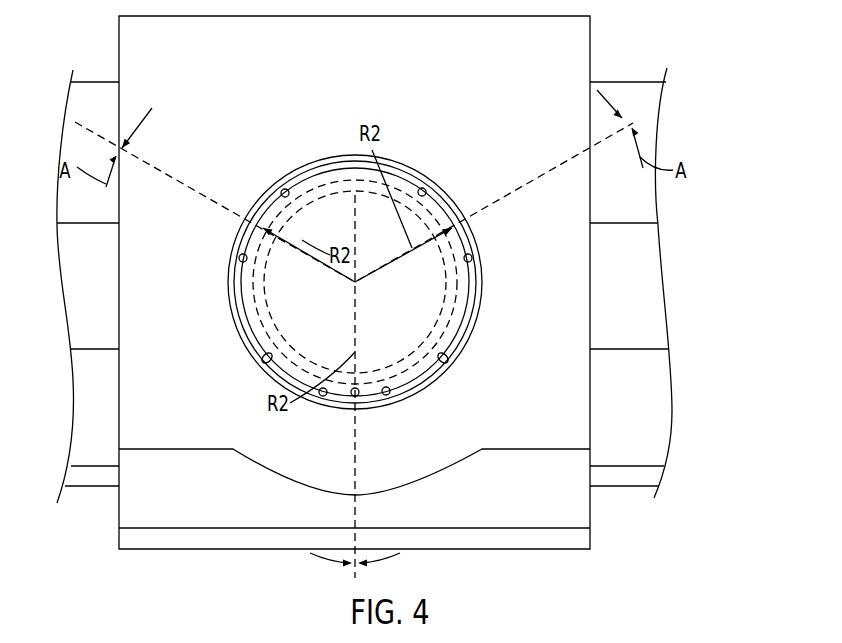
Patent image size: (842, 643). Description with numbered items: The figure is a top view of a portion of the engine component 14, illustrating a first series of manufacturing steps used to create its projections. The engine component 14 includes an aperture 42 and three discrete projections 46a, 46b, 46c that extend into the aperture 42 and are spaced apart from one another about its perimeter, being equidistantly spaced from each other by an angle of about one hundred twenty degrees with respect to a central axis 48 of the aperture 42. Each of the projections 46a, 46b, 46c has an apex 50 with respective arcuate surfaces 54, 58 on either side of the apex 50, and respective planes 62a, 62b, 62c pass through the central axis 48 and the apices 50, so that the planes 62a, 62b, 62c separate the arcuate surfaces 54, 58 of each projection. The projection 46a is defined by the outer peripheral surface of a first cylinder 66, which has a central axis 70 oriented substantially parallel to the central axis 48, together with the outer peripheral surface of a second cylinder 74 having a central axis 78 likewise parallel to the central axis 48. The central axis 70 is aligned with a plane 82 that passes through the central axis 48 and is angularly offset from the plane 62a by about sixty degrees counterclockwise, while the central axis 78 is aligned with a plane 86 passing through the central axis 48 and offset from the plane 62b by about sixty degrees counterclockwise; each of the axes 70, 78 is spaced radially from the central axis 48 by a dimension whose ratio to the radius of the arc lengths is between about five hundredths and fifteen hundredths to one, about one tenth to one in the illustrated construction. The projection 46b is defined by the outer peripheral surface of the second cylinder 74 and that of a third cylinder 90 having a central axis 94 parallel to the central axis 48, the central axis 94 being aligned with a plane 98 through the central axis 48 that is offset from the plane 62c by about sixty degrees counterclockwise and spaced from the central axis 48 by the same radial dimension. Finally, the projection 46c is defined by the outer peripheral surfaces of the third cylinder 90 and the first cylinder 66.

The engine component 14 is at (692, 72).
The aperture 42 is at (266, 366).
The projection 46a is at (277, 250).
The projection 46b is at (450, 248).
The projection 46c is at (360, 373).
The central axis 48 is at (352, 281).
The apex 50 is at (262, 220).
The arcuate surface 54 is at (239, 258).
The arcuate surface 58 is at (285, 189).
The plane 62a is at (208, 196).
The plane 62b is at (543, 177).
The plane 62c is at (362, 474).
The first cylinder 66 is at (427, 375).
The central axis 70 is at (360, 292).
The second cylinder 74 is at (240, 292).
The central axis 78 is at (357, 280).
The plane 82 is at (322, 303).
The plane 86 is at (350, 222).
The third cylinder 90 is at (405, 185).
The central axis 94 is at (361, 292).
The plane 98 is at (413, 250).